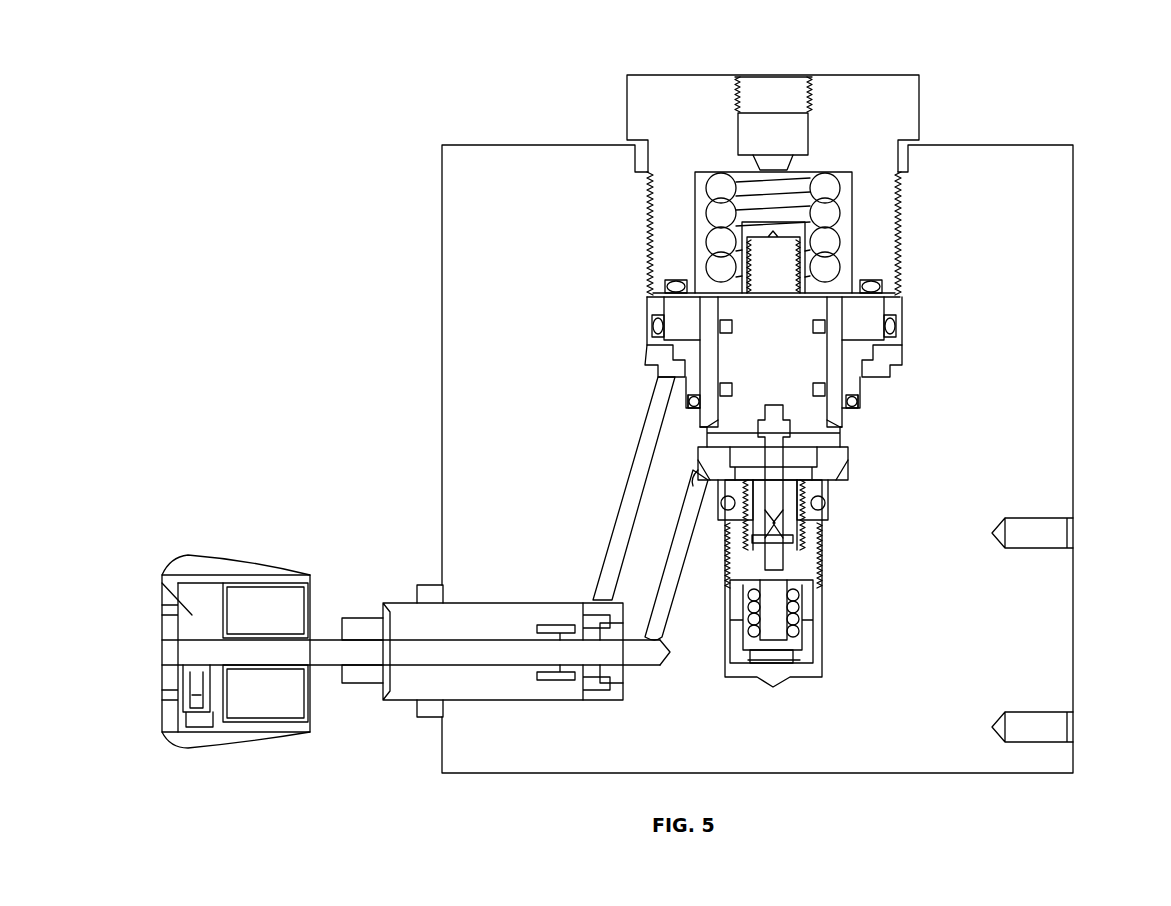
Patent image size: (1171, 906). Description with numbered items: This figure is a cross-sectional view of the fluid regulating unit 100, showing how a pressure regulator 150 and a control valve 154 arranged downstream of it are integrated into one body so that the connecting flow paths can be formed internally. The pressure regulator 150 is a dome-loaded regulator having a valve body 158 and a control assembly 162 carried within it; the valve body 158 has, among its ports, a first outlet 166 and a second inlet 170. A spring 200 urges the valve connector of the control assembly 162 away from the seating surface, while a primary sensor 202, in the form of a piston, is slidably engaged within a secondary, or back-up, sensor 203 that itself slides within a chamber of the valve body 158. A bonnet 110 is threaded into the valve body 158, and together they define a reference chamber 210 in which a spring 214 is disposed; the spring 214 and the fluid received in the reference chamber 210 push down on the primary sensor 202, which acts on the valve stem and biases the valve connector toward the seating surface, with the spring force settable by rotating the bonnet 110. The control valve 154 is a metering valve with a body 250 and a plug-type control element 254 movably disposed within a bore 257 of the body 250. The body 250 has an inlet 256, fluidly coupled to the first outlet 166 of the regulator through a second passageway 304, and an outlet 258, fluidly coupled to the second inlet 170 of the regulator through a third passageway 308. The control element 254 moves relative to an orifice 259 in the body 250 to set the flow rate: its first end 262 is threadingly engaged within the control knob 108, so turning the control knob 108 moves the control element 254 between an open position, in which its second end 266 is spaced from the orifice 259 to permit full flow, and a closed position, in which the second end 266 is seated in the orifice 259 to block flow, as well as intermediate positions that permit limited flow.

The fluid regulating unit 100 is at (1063, 68).
The control knob 108 is at (213, 555).
The bonnet 110 is at (660, 75).
The pressure regulator 150 is at (840, 540).
The control valve 154 is at (519, 581).
The valve body 158 is at (850, 470).
The control assembly 162 is at (775, 480).
The first outlet 166 is at (697, 478).
The second inlet 170 is at (655, 378).
The spring 200 is at (795, 620).
The primary sensor 202 is at (805, 420).
The secondary sensor 203 is at (700, 318).
The reference chamber 210 is at (707, 207).
The spring 214 is at (715, 245).
The body 250 is at (480, 620).
The control element 254 is at (512, 655).
The inlet 256 is at (622, 660).
The bore 257 is at (385, 612).
The outlet 258 is at (612, 600).
The orifice 259 is at (610, 680).
The first end 262 is at (192, 615).
The second end 266 is at (625, 655).
The second passageway 304 is at (670, 600).
The third passageway 308 is at (636, 478).